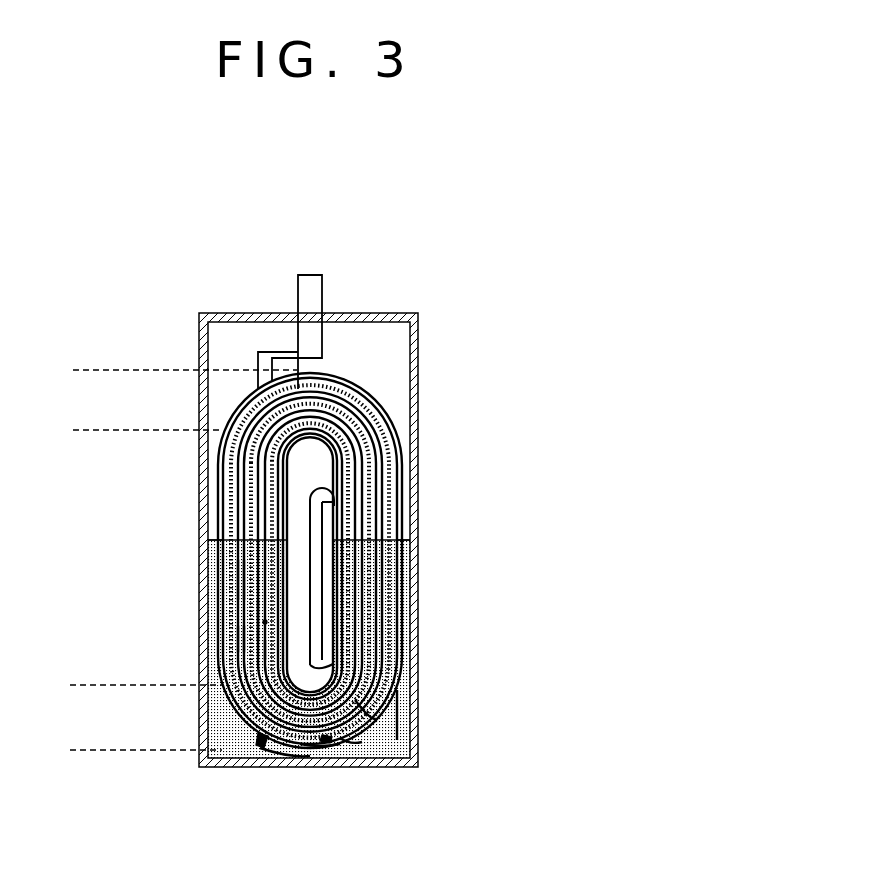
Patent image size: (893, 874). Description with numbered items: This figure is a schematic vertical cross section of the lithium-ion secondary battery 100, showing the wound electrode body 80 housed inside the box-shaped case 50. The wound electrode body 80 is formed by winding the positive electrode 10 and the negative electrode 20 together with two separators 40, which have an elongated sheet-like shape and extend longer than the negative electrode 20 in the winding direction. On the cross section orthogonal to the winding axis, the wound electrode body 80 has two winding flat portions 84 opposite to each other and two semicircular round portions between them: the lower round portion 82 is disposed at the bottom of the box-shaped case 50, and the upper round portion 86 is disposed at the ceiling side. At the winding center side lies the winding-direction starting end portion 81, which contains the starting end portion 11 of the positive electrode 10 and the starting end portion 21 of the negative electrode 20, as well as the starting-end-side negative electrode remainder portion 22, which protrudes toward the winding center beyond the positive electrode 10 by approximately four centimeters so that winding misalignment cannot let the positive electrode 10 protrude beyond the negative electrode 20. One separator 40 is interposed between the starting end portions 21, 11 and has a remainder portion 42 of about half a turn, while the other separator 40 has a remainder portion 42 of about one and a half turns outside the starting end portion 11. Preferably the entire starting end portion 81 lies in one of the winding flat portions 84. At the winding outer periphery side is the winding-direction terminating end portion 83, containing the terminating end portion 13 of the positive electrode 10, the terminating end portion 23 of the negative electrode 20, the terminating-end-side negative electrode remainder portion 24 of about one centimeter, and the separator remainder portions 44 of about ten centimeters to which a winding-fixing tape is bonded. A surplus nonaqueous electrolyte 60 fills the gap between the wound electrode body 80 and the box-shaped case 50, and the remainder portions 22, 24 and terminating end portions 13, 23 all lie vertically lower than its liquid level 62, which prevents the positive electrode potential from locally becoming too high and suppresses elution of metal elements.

The lithium-ion secondary battery 100 is at (468, 268).
The box-shaped case 50 is at (421, 352).
The separator 40 is at (381, 398).
The remainder portion of separator 42 is at (339, 498).
The liquid level 62 is at (421, 543).
The surplus nonaqueous electrolyte 60 is at (411, 593).
The negative electrode 20 is at (388, 638).
The positive electrode 10 is at (380, 658).
The winding-direction terminating end portion 83 is at (376, 719).
The winding-direction terminating end portion of positive electrode 13 is at (412, 742).
The remainder portions of separators 44 is at (285, 758).
The winding-direction terminating end portion of negative electrode 23 is at (332, 760).
The terminating-end-side negative electrode remainder portion 24 is at (350, 743).
The starting end portion of positive electrode 11 is at (246, 614).
The starting end portion of negative electrode 21 is at (278, 656).
The starting-end-side negative electrode remainder portion 22 is at (267, 652).
The winding-direction starting end portion 81 is at (265, 622).
The wound electrode body 80 is at (243, 386).
The upper round portion 86 is at (112, 370).
The winding flat portions 84 is at (112, 430).
The lower round portion 82 is at (112, 685).